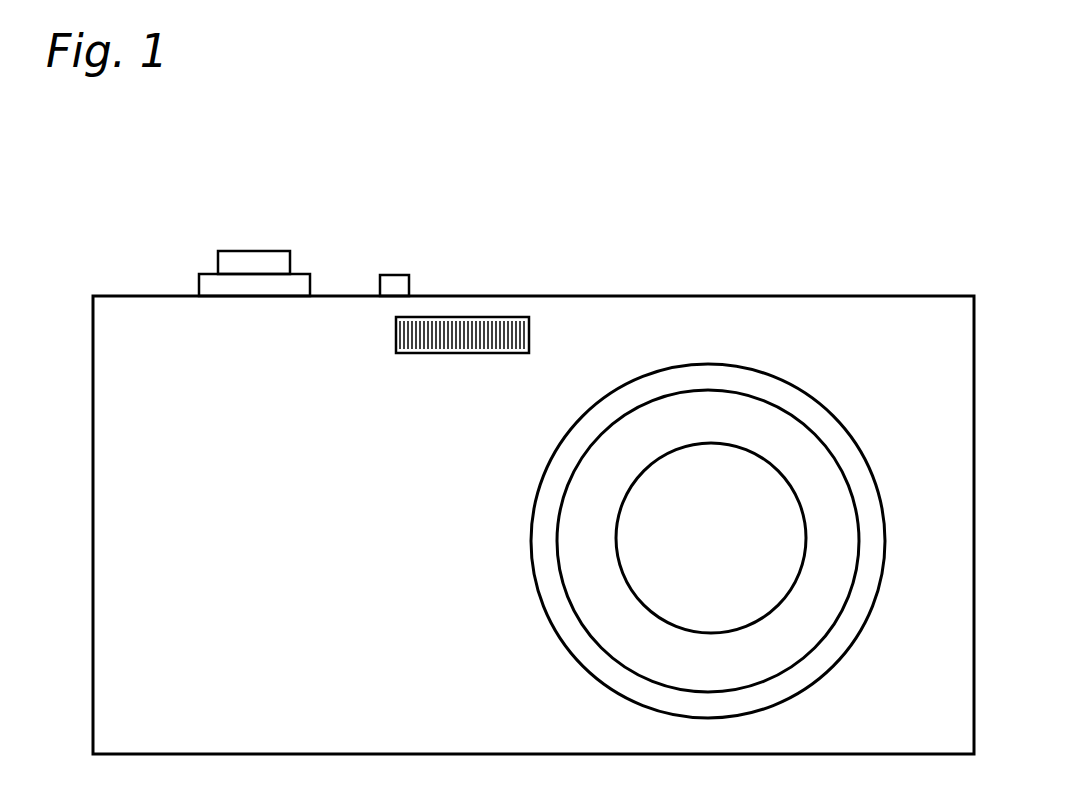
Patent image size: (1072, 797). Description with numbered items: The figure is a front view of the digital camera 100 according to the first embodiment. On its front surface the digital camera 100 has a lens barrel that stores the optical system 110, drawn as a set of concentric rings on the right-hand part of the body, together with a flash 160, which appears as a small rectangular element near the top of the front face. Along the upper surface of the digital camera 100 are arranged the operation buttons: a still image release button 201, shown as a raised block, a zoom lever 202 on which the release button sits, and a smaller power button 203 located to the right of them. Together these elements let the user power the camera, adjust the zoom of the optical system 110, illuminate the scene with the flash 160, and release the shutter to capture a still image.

The digital camera 100 is at (813, 179).
The optical system 110 is at (758, 559).
The flash 160 is at (474, 339).
The still image release button 201 is at (243, 263).
The zoom lever 202 is at (298, 283).
The power button 203 is at (393, 287).